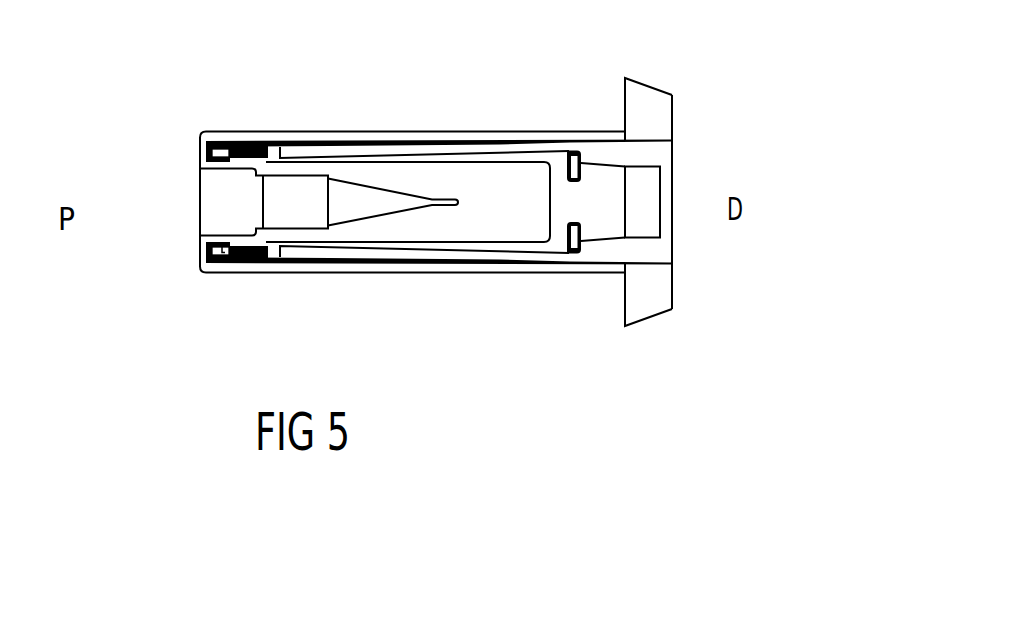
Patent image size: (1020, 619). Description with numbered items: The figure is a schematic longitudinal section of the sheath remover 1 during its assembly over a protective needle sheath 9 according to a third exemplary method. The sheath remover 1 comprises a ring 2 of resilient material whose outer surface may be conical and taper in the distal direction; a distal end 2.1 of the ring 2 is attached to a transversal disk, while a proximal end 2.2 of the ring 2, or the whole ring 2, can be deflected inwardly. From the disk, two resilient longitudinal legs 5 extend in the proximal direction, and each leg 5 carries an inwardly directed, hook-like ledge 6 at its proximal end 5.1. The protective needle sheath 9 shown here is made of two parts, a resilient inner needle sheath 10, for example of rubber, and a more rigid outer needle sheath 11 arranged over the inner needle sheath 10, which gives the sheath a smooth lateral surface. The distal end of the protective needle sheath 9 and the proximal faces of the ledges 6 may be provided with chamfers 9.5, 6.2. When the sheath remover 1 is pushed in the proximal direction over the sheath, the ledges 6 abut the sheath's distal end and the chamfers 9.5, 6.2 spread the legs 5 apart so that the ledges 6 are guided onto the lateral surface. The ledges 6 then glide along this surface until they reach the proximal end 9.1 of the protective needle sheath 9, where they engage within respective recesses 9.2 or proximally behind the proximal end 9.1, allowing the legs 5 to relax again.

The sheath remover 1 is at (558, 113).
The ring 2 is at (655, 100).
The distal end of the ring 2.1 is at (673, 100).
The proximal end of the ring 2.2 is at (624, 95).
The leg 5 is at (452, 136).
The proximal end of the leg 5.1 is at (201, 130).
The ledge 6 is at (200, 153).
The chamfer 6.2 is at (198, 247).
The protective needle sheath 9 is at (503, 142).
The proximal end of the protective needle sheath 9.1 is at (197, 162).
The recess 9.2 is at (223, 272).
The chamfer 9.5 is at (569, 257).
The inner needle sheath 10 is at (418, 170).
The outer needle sheath 11 is at (345, 141).